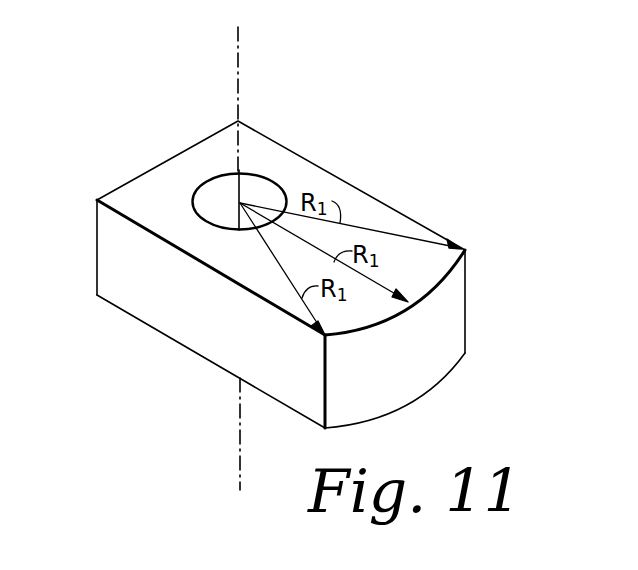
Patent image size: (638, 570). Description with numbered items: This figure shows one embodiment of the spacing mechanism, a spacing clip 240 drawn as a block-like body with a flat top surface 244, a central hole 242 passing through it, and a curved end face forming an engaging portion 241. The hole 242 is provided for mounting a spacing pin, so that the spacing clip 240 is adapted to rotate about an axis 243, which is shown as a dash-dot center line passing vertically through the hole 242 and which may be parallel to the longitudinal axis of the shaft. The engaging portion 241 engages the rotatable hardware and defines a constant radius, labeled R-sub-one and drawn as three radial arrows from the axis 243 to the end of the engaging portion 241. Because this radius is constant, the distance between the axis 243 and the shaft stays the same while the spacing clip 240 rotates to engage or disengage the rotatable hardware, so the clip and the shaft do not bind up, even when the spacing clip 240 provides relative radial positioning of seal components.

The spacing clip 240 is at (325, 172).
The engaging portion 241 is at (447, 222).
The hole 242 is at (220, 193).
The axis 243 is at (239, 52).
The top surface 244 is at (337, 125).